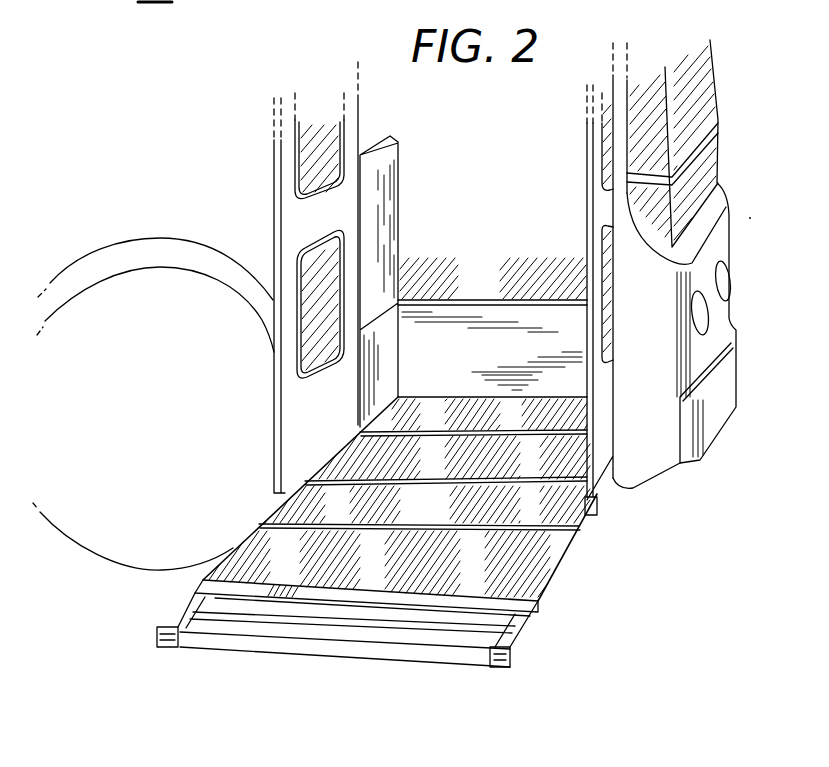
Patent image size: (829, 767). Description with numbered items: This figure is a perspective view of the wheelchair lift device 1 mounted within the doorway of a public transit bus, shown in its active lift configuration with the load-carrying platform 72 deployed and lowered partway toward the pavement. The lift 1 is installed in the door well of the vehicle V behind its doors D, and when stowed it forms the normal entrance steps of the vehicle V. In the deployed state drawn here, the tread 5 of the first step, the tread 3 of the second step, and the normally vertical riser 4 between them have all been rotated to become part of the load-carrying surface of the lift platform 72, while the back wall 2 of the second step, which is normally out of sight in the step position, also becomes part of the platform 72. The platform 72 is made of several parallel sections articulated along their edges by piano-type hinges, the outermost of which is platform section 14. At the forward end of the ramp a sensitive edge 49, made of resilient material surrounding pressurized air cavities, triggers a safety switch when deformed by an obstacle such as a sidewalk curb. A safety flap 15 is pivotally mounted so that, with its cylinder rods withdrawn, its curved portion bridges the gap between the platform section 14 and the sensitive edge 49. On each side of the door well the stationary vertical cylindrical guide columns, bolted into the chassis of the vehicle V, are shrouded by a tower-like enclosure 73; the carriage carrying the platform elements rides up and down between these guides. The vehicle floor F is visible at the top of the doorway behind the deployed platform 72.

The wheelchair lift device 1 is at (560, 419).
The back wall of step B 2 is at (449, 410).
The tread of step B 3 is at (346, 447).
The riser 4 is at (300, 512).
The tread of step A 5 is at (260, 549).
The platform section 14 is at (532, 606).
The safety flap 15 is at (515, 632).
The sensitive edge 49 is at (287, 643).
The load-carrying platform 72 is at (430, 512).
The tower-like enclosure 73 is at (393, 162).
The doors D is at (295, 215).
The vehicle floor F is at (508, 288).
The vehicle V is at (661, 282).